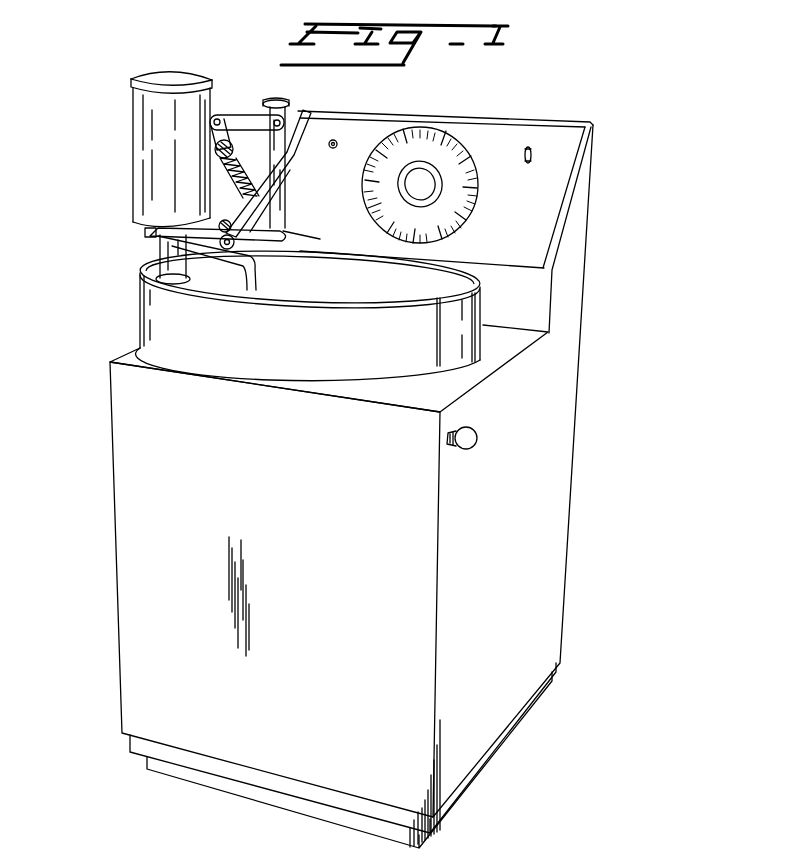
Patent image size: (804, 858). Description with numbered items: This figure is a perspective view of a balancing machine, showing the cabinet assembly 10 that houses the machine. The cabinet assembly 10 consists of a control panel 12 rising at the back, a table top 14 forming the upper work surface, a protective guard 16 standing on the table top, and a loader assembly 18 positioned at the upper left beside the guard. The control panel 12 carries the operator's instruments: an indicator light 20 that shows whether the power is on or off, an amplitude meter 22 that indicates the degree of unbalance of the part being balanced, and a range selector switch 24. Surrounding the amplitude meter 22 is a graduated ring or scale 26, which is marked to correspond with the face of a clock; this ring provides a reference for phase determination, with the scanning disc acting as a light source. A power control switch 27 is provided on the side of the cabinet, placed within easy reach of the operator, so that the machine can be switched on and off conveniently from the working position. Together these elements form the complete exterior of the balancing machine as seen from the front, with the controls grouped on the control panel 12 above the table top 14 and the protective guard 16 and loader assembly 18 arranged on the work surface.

The cabinet assembly 10 is at (606, 366).
The control panel 12 is at (532, 131).
The table top 14 is at (511, 352).
The protective guard 16 is at (290, 358).
The loader assembly 18 is at (120, 144).
The indicator light 20 is at (336, 140).
The amplitude meter 22 is at (425, 195).
The range selector switch 24 is at (533, 157).
The graduated ring or scale 26 is at (478, 187).
The power control switch 27 is at (477, 438).